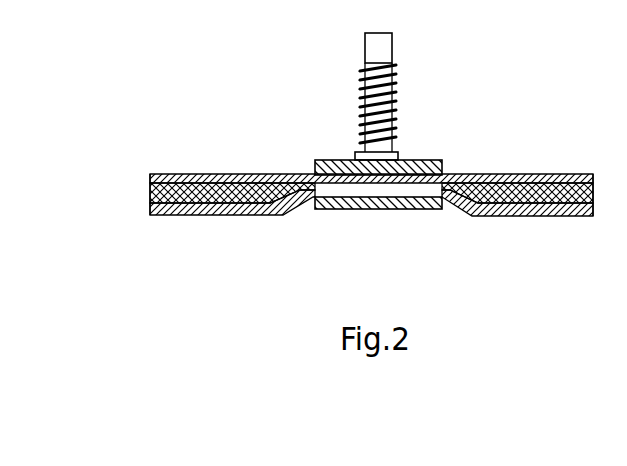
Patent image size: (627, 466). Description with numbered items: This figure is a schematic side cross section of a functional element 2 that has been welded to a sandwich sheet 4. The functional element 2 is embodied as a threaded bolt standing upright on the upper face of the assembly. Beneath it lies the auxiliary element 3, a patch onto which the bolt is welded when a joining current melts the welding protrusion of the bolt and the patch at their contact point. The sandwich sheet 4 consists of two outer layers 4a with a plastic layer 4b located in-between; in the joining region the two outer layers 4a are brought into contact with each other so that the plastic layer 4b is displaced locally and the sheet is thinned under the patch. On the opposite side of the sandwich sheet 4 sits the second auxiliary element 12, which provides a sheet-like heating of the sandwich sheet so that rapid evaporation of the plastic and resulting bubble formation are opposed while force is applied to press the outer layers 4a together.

The functional element 2 is at (385, 48).
The auxiliary element 3 is at (428, 165).
The sandwich sheet 4 is at (336, 173).
The outer layers 4a is at (175, 175).
The plastic layer 4b is at (152, 198).
The second auxiliary element 12 is at (413, 200).